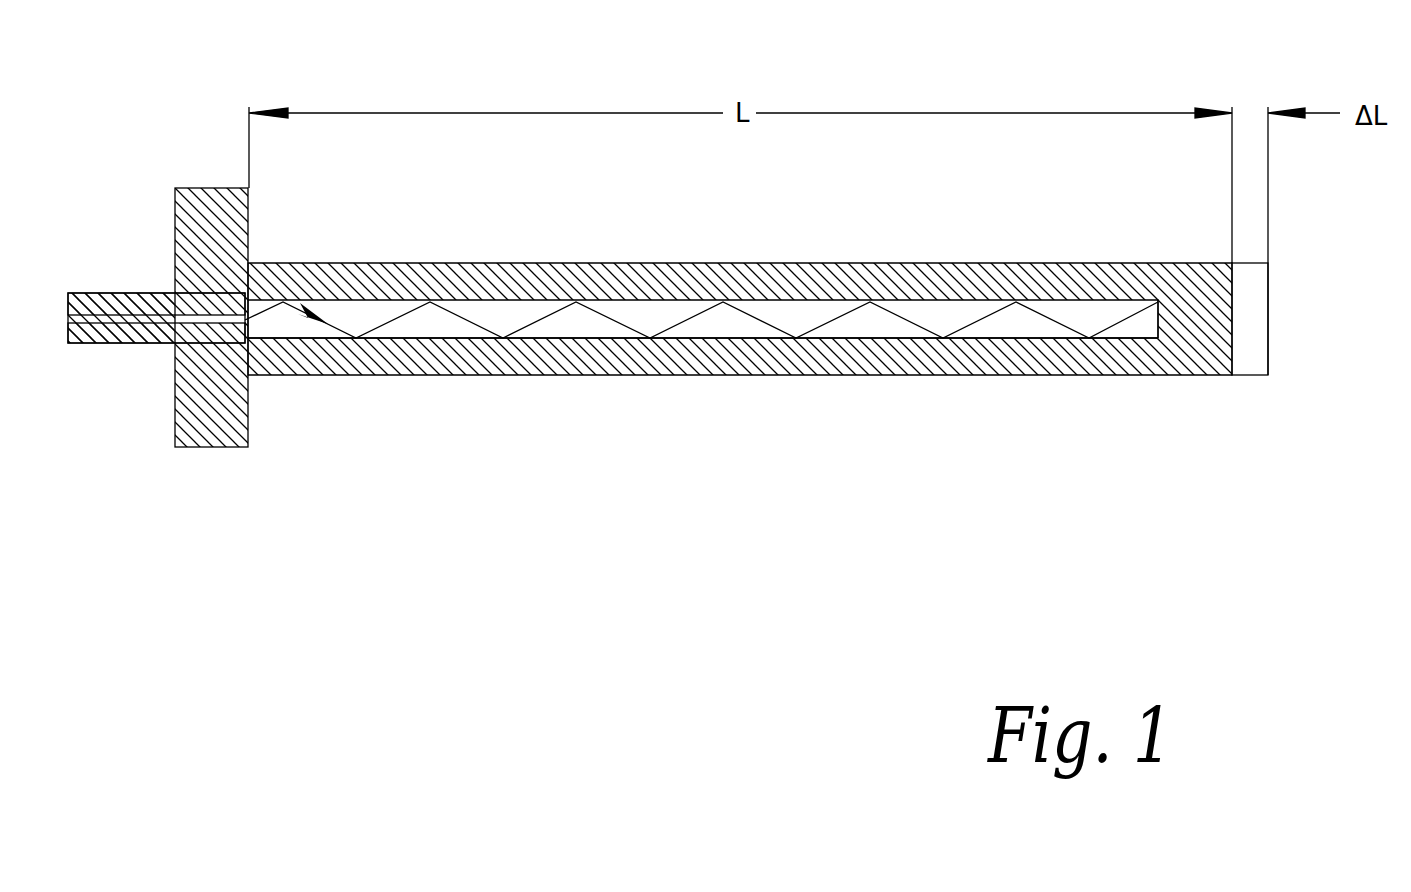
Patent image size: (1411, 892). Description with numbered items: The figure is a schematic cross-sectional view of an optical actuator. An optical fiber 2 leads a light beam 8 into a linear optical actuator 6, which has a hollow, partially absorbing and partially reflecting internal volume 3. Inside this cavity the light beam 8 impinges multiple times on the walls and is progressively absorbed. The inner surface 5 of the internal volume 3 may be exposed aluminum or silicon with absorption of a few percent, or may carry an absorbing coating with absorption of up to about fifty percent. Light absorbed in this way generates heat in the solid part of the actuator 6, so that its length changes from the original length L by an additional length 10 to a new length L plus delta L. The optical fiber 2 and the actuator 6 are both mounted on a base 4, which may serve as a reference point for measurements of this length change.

The optical fiber 2 is at (138, 343).
The internal volume 3 is at (863, 322).
The base 4 is at (210, 410).
The inner surface 5 is at (993, 338).
The linear optical actuator 6 is at (518, 353).
The light beam 8 is at (749, 313).
The additional length 10 is at (1246, 348).